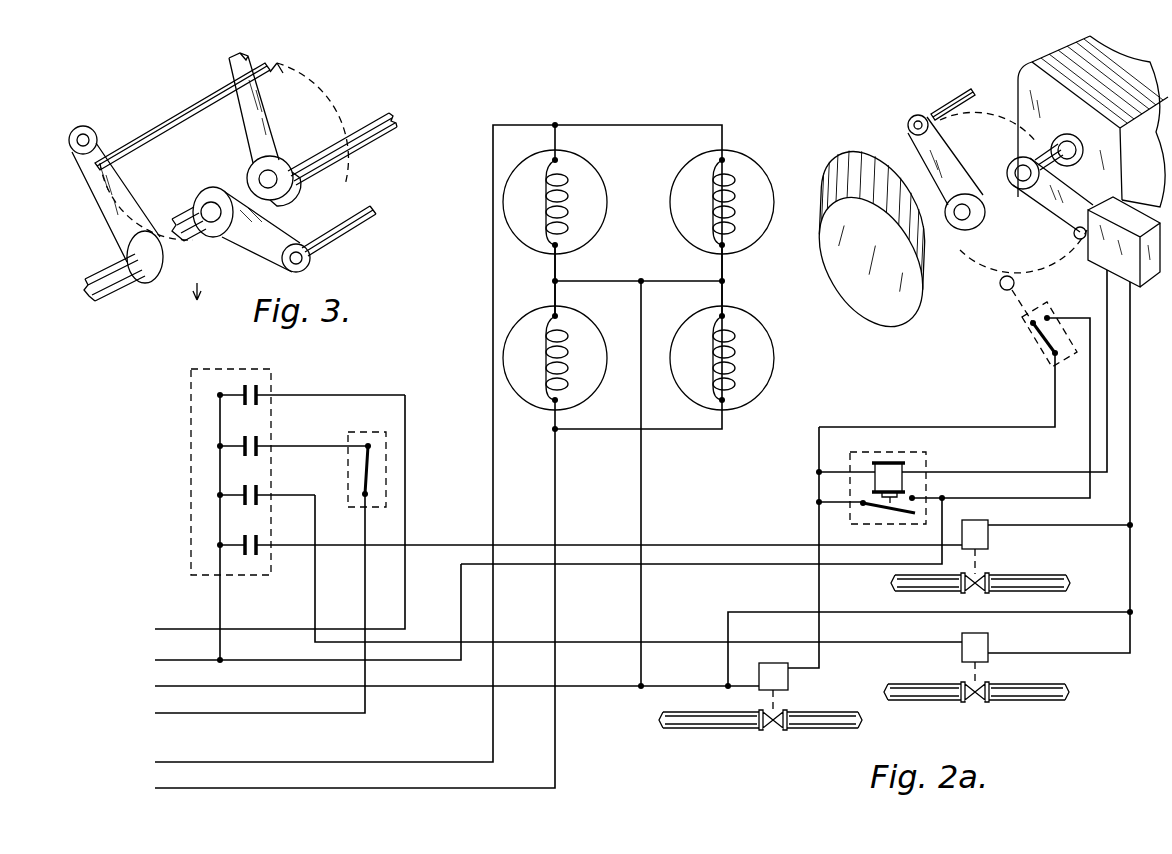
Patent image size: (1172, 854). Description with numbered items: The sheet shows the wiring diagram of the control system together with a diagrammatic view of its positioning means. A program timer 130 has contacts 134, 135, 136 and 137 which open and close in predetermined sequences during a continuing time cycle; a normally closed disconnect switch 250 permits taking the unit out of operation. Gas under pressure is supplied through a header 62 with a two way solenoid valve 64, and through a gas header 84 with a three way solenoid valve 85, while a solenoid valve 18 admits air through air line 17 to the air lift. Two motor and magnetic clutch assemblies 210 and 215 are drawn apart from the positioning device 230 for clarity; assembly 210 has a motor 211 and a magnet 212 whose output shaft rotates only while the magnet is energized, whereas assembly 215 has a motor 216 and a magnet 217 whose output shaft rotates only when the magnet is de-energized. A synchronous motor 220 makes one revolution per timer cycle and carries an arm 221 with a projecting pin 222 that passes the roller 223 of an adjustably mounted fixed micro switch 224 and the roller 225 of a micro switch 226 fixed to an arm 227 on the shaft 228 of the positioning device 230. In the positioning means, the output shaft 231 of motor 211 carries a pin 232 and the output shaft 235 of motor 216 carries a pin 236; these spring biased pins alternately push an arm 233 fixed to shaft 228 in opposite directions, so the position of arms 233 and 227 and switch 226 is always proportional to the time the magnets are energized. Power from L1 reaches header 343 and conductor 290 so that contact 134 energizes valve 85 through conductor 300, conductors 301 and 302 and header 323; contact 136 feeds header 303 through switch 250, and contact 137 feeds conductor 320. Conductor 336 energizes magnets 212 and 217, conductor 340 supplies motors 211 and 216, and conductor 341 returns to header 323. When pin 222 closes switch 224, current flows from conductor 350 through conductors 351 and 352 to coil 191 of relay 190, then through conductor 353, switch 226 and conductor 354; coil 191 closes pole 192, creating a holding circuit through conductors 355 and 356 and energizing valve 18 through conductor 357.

In FIG. 2A, the air line 17 is at (722, 735).
In FIG. 2A, the solenoid valve 18 is at (773, 676).
In FIG. 2A, the header 62 is at (1058, 688).
In FIG. 2A, the two way solenoid valve 64 is at (651, 578).
In FIG. 2A, the gas header 84 is at (896, 585).
In FIG. 2A, the three way solenoid valve 85 is at (975, 534).
In FIG. 2A, the program timer 130 is at (175, 482).
In FIG. 2A, the contact 134 is at (246, 537).
In FIG. 2A, the contact 135 is at (266, 487).
In FIG. 2A, the contact 136 is at (292, 437).
In FIG. 2A, the contact 137 is at (311, 388).
In FIG. 2A, the relay 190 is at (908, 447).
In FIG. 2A, the coil 191 is at (905, 466).
In FIG. 2A, the pole 192 is at (897, 510).
In FIG. 2A, the motor and magnetic clutch 210 is at (545, 287).
In FIG. 2A, the motor 211 is at (530, 400).
In FIG. 2A, the magnet 212 is at (583, 168).
In FIG. 2A, the motor and magnetic clutch 215 is at (780, 287).
In FIG. 2A, the motor 216 is at (735, 404).
In FIG. 2A, the magnet 217 is at (742, 160).
In FIG. 2A, the synchronous motor 220 is at (866, 190).
In FIG. 2A, the arm 221 is at (912, 138).
In FIG. 2A, the projecting pin 222 is at (948, 100).
In FIG. 2A, the roller 223 is at (1018, 280).
In FIG. 2A, the micro switch 224 is at (1031, 340).
In FIG. 2A, the roller 225 is at (1072, 236).
In FIG. 2A, the micro switch 226 is at (1111, 242).
In FIG. 2A, the arm 227 is at (1063, 215).
In FIG. 3, the shaft 228 is at (356, 118).
In FIG. 2A, the shaft 228 is at (1051, 142).
In FIG. 2A, the positioning device 230 is at (1030, 60).
In FIG. 3, the output shaft 231 is at (93, 262).
In FIG. 3, the pin 232 is at (160, 118).
In FIG. 3, the arm 233 is at (245, 137).
In FIG. 3, the output shaft 235 is at (200, 240).
In FIG. 3, the pin 236 is at (340, 245).
In FIG. 2A, the disconnect switch 250 is at (372, 430).
In FIG. 2A, the conductor 290 is at (218, 584).
In FIG. 2A, the conductor 300 is at (705, 545).
In FIG. 2A, the conductor 301 is at (1045, 527).
In FIG. 2A, the conductor 302 is at (790, 613).
In FIG. 2A, the header 303 is at (192, 715).
In FIG. 2A, the conductor 320 is at (243, 631).
In FIG. 2A, the header 323 is at (190, 690).
In FIG. 2A, the conductor 336 is at (178, 764).
In FIG. 2A, the conductor 340 is at (180, 790).
In FIG. 2A, the conductor 341 is at (641, 500).
In FIG. 2A, the header 343 is at (245, 662).
In FIG. 2A, the conductor 350 is at (722, 566).
In FIG. 2A, the conductor 351 is at (960, 428).
In FIG. 2A, the conductor 352 is at (819, 470).
In FIG. 2A, the conductor 353 is at (1015, 472).
In FIG. 2A, the conductor 354 is at (1128, 497).
In FIG. 2A, the conductor 355 is at (942, 496).
In FIG. 2A, the conductor 356 is at (819, 508).
In FIG. 2A, the conductor 357 is at (827, 650).